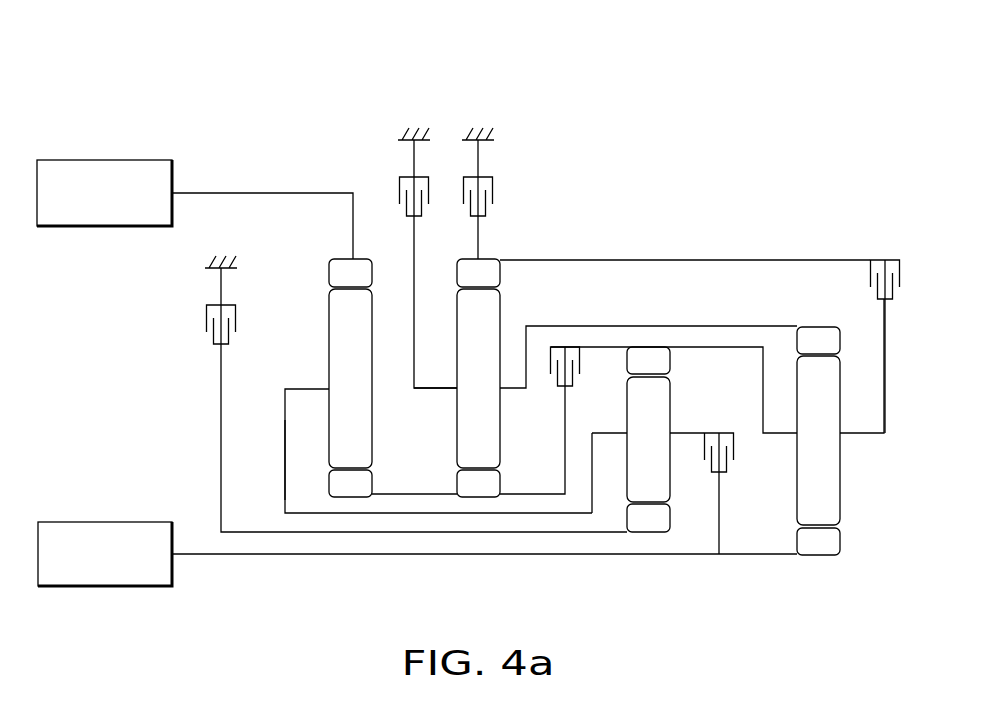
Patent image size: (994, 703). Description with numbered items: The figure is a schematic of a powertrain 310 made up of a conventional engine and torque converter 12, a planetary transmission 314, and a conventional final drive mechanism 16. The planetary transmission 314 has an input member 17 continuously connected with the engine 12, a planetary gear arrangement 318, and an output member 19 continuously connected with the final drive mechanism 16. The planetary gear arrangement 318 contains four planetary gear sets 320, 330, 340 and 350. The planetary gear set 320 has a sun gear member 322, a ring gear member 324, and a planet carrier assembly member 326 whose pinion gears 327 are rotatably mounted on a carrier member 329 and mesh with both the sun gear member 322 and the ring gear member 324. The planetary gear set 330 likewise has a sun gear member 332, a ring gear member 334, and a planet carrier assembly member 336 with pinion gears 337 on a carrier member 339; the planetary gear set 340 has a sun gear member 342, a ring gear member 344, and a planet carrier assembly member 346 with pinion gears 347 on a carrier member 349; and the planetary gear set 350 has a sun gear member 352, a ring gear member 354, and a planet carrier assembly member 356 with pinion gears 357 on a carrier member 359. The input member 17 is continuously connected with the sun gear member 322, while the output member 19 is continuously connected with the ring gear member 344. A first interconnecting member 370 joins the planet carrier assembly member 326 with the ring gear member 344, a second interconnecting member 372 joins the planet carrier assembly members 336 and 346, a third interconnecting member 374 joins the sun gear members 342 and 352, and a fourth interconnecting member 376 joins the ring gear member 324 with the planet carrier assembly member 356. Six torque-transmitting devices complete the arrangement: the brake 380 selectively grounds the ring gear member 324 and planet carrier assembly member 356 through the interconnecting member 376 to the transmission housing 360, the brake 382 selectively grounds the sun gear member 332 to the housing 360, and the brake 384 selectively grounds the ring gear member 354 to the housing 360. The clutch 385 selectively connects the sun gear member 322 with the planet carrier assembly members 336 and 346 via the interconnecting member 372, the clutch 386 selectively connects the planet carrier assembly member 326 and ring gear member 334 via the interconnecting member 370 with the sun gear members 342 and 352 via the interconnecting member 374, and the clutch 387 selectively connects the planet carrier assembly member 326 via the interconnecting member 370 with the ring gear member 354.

The engine and torque converter 12 is at (108, 505).
The final drive mechanism 16 is at (103, 143).
The input member 17 is at (195, 556).
The output member 19 is at (213, 193).
The powertrain 310 is at (477, 60).
The planetary transmission 314 is at (635, 80).
The planetary gear arrangement 318 is at (740, 78).
The planetary gear set 320 is at (801, 467).
The sun gear member 322 is at (818, 541).
The ring gear member 324 is at (804, 352).
The planet carrier assembly member 326 is at (853, 450).
The pinion gears 327 is at (804, 442).
The carrier member 329 is at (872, 434).
The planetary gear set 330 is at (626, 477).
The sun gear member 332 is at (648, 518).
The ring gear member 334 is at (634, 372).
The planet carrier assembly member 336 is at (680, 422).
The pinion gears 337 is at (634, 442).
The carrier member 339 is at (688, 432).
The planetary gear set 340 is at (322, 433).
The sun gear member 342 is at (350, 483).
The ring gear member 344 is at (336, 284).
The planet carrier assembly member 346 is at (315, 375).
The pinion gears 347 is at (336, 385).
The carrier member 349 is at (300, 388).
The planetary gear set 350 is at (451, 433).
The sun gear member 352 is at (478, 483).
The ring gear member 354 is at (464, 284).
The planet carrier assembly member 356 is at (445, 402).
The pinion gears 357 is at (464, 385).
The carrier member 359 is at (437, 390).
The transmission housing 360 is at (207, 268).
The first interconnecting member 370 is at (723, 347).
The second interconnecting member 372 is at (284, 455).
The third interconnecting member 374 is at (438, 494).
The fourth interconnecting member 376 is at (682, 326).
The brake 380 is at (393, 193).
The brake 382 is at (207, 345).
The brake 384 is at (502, 193).
The clutch 385 is at (705, 465).
The clutch 386 is at (553, 386).
The clutch 387 is at (866, 300).